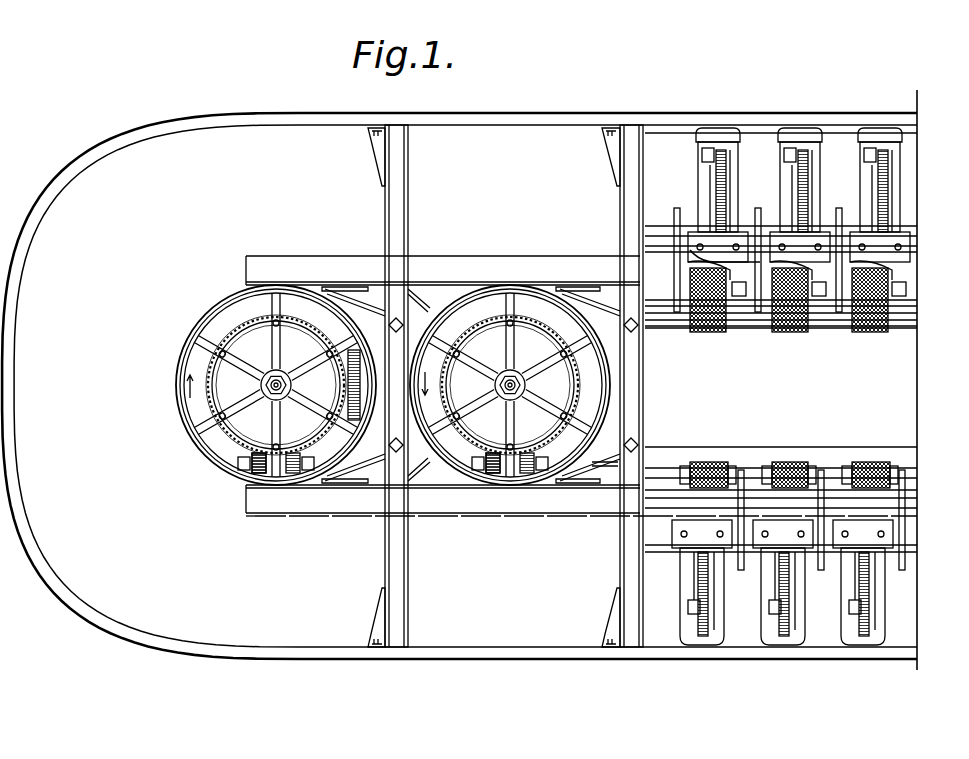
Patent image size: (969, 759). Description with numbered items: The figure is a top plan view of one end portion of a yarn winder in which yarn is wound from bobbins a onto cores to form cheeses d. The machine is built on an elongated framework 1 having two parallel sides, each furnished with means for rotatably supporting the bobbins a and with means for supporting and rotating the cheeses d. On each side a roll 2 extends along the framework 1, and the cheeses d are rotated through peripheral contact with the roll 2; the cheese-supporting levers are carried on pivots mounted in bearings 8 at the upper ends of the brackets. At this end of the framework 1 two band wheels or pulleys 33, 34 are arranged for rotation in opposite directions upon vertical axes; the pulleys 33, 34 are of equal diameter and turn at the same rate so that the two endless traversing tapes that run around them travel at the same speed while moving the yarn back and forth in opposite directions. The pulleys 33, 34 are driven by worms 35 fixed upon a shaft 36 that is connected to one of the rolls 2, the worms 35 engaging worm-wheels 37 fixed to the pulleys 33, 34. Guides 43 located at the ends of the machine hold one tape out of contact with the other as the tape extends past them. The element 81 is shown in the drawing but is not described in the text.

The framework 1 is at (560, 515).
The roll 2 is at (822, 330).
The bearings 8 is at (722, 252).
The pulley 33 is at (185, 407).
The pulley 34 is at (605, 415).
The worms 35 is at (265, 470).
The shaft 36 is at (600, 468).
The worm-wheels 37 is at (215, 368).
The guides 43 is at (375, 292).
The rod 81 is at (690, 250).
The bobbins a is at (735, 162).
The cheeses d is at (775, 332).